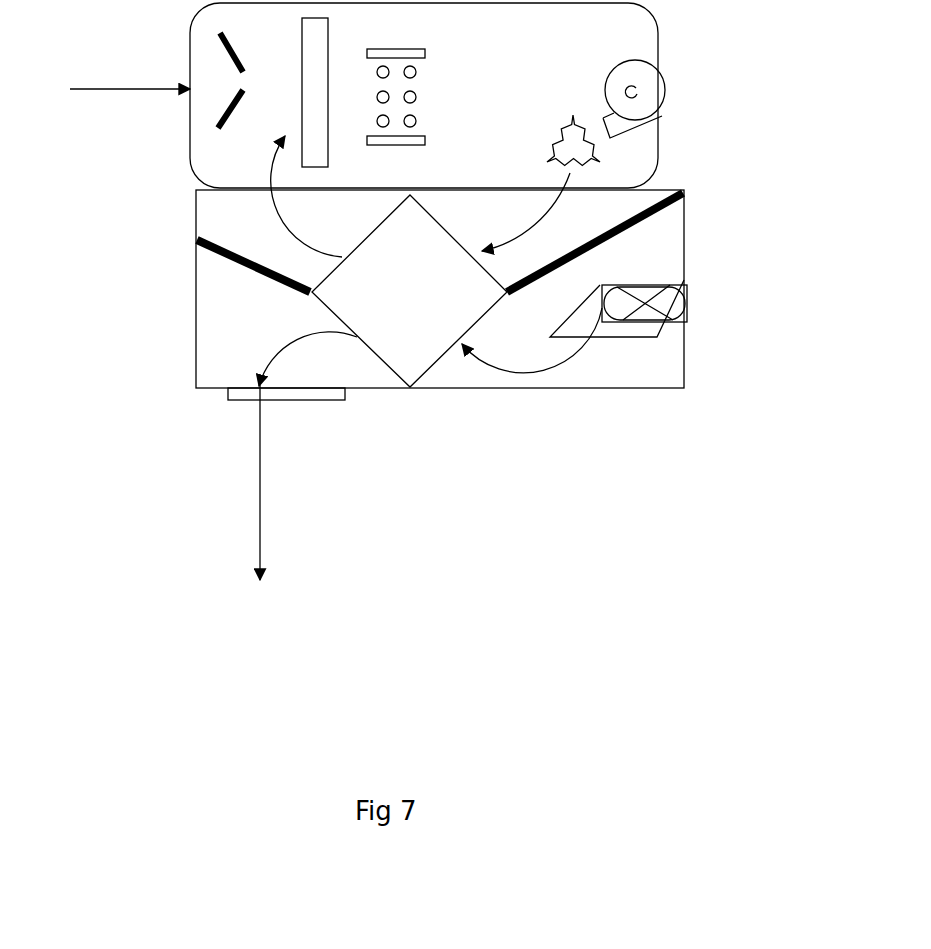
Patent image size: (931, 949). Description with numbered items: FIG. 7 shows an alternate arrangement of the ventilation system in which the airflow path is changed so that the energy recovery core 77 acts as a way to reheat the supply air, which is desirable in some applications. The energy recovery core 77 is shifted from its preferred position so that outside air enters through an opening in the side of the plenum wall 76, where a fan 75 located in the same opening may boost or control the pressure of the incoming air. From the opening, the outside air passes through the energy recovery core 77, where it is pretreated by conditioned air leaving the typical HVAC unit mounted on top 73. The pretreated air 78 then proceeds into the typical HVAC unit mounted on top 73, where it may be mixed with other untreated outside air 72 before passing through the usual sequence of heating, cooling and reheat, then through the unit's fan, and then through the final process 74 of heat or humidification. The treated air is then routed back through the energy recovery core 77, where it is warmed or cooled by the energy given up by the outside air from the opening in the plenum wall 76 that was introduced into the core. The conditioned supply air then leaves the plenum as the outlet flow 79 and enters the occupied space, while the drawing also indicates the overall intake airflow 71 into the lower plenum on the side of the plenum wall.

The air inlet / intake air flow 71 is at (721, 305).
The untreated outside air 72 is at (129, 71).
The typical HVAC unit mounted on top 73 is at (427, 95).
The final process of heat or humidification 74 is at (616, 153).
The fan 75 is at (685, 324).
The opening in the side of the plenum wall 76 is at (629, 331).
The energy recovery core 77 is at (409, 291).
The air 78 is at (226, 163).
The air outlet flow 79 is at (296, 456).